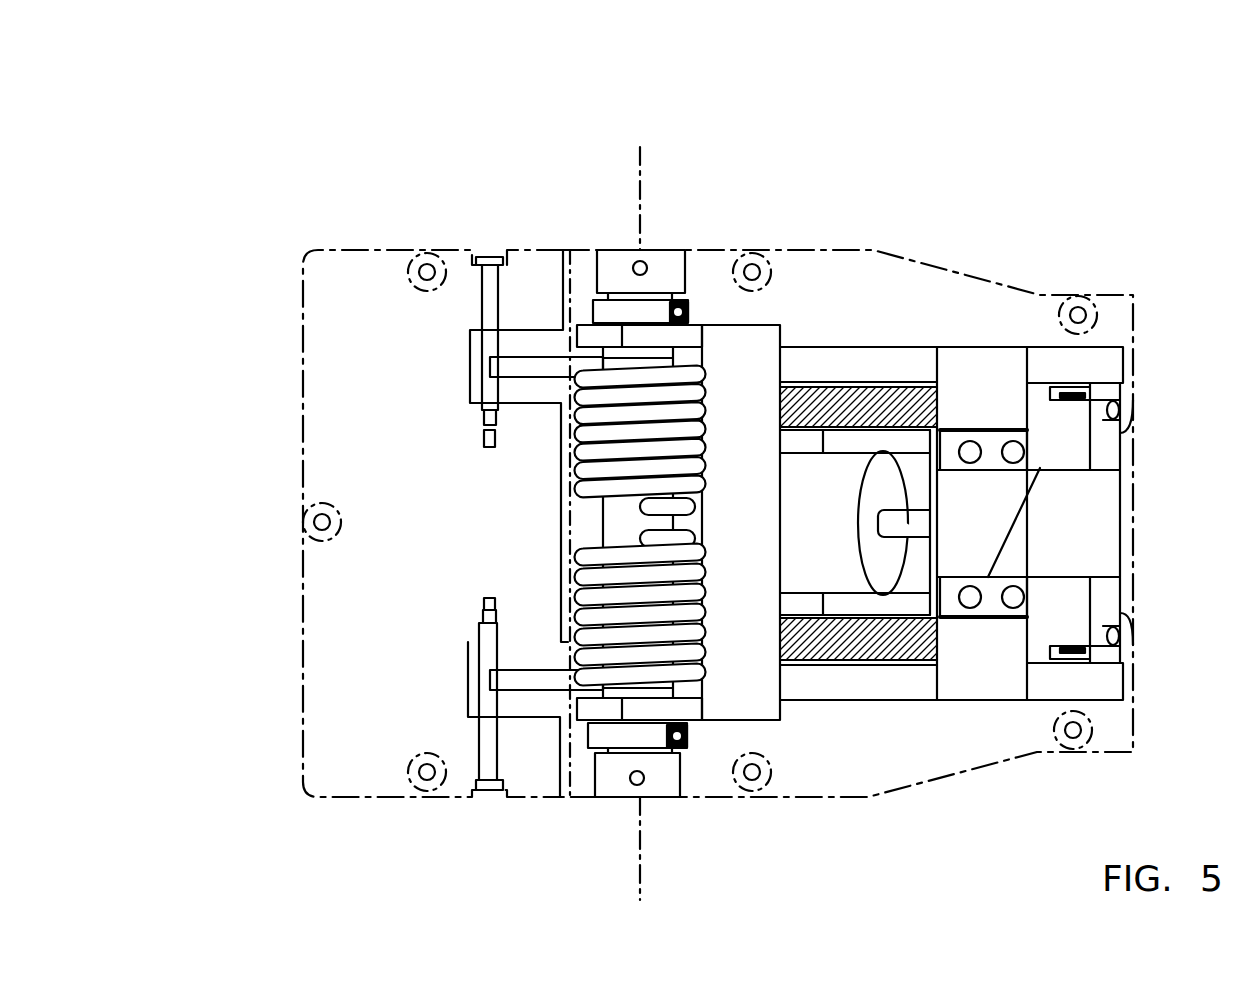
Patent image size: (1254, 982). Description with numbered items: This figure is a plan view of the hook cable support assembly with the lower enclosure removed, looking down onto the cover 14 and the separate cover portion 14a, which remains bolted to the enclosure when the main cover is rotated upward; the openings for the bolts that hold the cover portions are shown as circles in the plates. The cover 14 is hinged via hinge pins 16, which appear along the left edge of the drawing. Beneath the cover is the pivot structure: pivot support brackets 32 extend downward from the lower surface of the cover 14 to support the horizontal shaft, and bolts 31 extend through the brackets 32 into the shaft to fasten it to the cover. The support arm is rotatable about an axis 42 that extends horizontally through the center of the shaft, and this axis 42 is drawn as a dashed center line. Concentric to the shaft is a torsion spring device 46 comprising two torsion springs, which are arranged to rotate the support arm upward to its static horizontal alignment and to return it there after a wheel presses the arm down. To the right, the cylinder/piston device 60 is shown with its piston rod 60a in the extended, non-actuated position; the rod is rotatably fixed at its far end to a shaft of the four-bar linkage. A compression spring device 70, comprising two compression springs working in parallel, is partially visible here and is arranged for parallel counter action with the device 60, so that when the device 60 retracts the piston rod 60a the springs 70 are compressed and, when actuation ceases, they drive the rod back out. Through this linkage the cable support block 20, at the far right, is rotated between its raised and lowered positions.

The cover 14 is at (925, 782).
The cover portion 14a is at (303, 308).
The hinge pins 16 is at (490, 257).
The cable support block 20 is at (1120, 528).
The bolts 31 is at (650, 265).
The pivot support brackets 32 is at (587, 272).
The axis 42 is at (642, 200).
The torsion spring device 46 is at (585, 452).
The cylinder/piston device 60 is at (855, 522).
The piston rod 60a is at (918, 540).
The compression spring device 70 is at (850, 395).